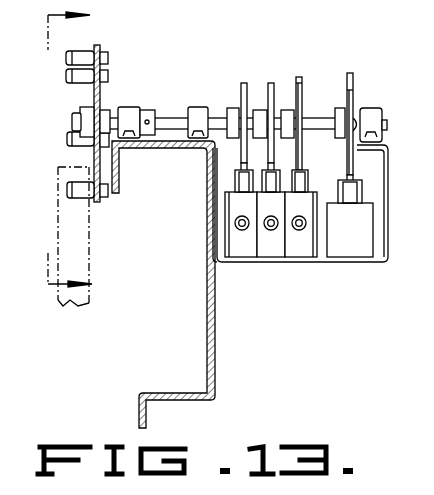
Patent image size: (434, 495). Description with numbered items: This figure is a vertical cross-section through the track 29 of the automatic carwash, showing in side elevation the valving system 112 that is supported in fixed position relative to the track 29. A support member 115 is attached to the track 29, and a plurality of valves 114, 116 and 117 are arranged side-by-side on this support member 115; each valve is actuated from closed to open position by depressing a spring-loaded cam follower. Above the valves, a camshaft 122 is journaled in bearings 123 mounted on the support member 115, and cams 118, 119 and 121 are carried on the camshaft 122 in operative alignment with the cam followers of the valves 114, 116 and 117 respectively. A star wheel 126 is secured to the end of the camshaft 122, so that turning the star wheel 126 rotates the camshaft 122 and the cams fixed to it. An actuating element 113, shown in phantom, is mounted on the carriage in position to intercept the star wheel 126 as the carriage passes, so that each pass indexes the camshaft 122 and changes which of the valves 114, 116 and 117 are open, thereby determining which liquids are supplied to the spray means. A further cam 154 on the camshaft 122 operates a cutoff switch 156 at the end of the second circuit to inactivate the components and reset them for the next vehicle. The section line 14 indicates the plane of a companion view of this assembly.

The section line 14- 14 is at (83, 152).
The track 29 is at (215, 352).
The valving system 112 is at (357, 88).
The actuating element 113 is at (62, 218).
The valve 114 is at (243, 250).
The support member 115 is at (358, 263).
The valve 116 is at (272, 250).
The valve 117 is at (297, 250).
The cam 118 is at (246, 82).
The cam 119 is at (271, 82).
The cam 121 is at (300, 76).
The camshaft 122 is at (170, 117).
The bearings 123 is at (129, 106).
The star wheel 126 is at (100, 44).
The cam 154 is at (352, 72).
The cutoff switch 156 is at (360, 239).